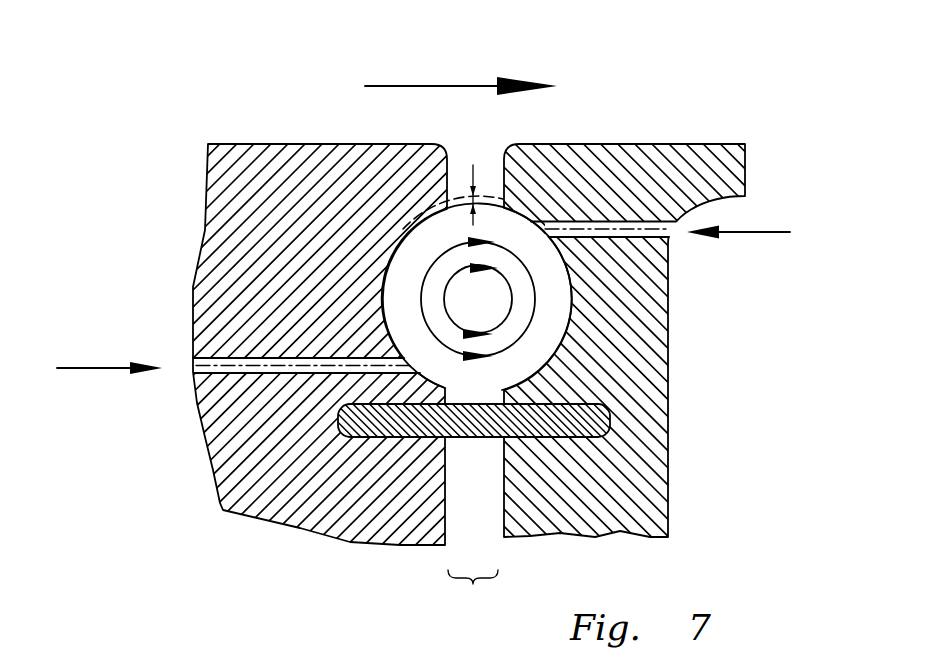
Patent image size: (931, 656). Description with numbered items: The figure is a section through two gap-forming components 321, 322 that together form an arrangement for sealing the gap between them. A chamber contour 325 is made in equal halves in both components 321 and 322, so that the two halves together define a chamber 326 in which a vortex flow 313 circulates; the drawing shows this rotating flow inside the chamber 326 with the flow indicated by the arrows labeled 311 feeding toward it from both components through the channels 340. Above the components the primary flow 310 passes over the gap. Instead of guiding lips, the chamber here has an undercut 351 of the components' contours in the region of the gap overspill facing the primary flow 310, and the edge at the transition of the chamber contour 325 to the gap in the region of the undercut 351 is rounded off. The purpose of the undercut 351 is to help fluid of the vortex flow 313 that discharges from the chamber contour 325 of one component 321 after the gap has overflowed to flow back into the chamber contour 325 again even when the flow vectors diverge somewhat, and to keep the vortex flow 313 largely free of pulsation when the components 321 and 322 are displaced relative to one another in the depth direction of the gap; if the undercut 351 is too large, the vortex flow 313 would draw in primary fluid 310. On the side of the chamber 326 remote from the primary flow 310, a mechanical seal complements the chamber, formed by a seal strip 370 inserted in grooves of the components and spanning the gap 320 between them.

The component 321 is at (275, 163).
The component 322 is at (640, 160).
The primary flow 310 is at (428, 83).
The inlet flow direction 311 is at (87, 367).
The inlet channel 340 is at (210, 372).
The chamber contour 325 is at (383, 303).
The chamber 326 is at (537, 344).
The vortex flow 313 is at (512, 312).
The undercut 351 is at (474, 200).
The seal strip 370 is at (448, 437).
The outlet channel 320 is at (473, 595).